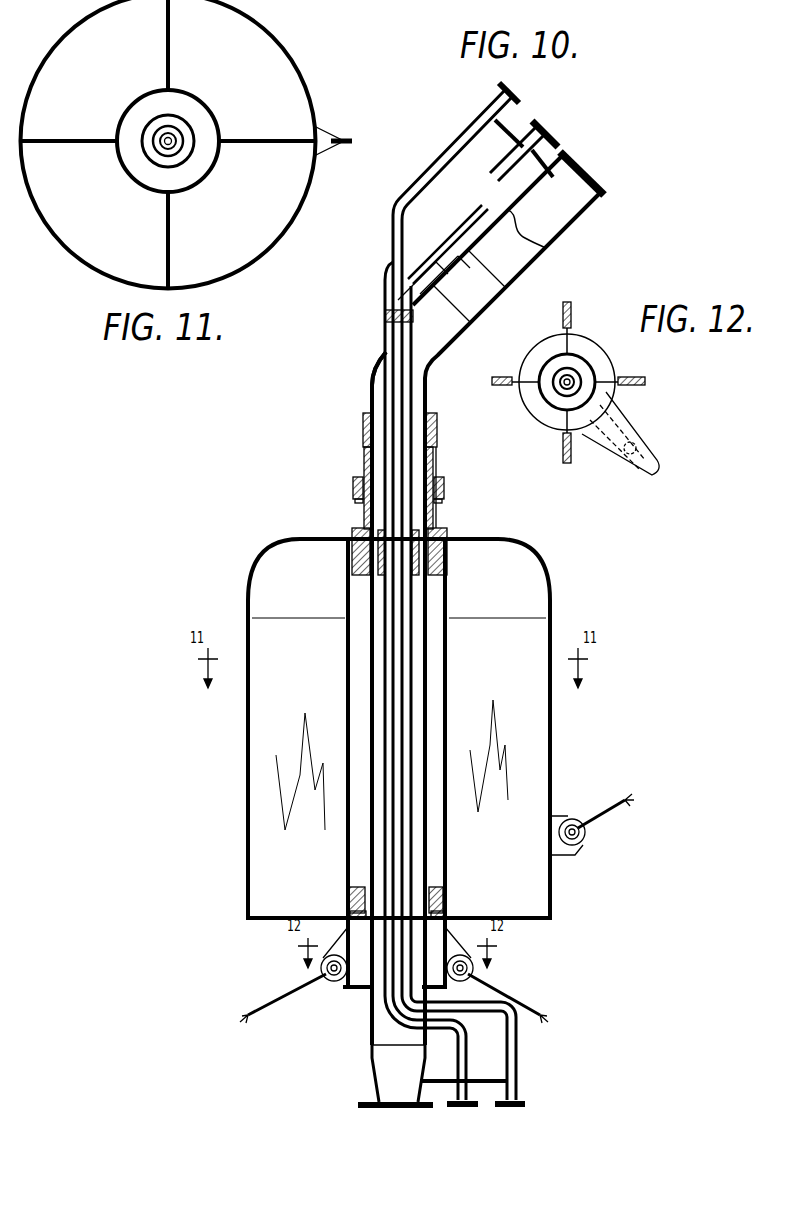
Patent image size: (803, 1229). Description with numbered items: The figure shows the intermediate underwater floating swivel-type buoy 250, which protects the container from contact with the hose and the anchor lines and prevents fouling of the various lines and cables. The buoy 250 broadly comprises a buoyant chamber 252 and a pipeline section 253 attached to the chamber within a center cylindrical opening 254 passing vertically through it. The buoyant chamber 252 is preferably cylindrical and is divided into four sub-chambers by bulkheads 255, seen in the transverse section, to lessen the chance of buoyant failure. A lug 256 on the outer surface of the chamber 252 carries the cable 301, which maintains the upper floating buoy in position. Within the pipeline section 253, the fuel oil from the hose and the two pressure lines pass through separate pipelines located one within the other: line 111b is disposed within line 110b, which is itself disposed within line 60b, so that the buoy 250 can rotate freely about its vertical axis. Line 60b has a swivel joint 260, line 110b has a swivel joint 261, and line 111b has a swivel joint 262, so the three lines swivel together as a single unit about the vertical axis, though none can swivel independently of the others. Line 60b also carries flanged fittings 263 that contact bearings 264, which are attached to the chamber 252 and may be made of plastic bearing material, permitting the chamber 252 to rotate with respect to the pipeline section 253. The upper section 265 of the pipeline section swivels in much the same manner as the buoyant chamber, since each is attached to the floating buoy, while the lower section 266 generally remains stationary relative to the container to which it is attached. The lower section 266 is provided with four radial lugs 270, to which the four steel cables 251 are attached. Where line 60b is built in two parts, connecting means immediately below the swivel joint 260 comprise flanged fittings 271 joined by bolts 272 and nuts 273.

In FIG. 11, the line 60b is at (181, 166).
In FIG. 12, the line 60b is at (578, 356).
In FIG. 10, the line 60b is at (447, 349).
In FIG. 11, the line 110b is at (154, 148).
In FIG. 12, the line 110b is at (580, 377).
In FIG. 10, the line 110b is at (428, 260).
In FIG. 11, the line 111b is at (176, 145).
In FIG. 12, the line 111b is at (560, 388).
In FIG. 10, the line 111b is at (392, 244).
In FIG. 10, the intermediate underwater floating swivel-type buoy 250 is at (553, 749).
In FIG. 10, the steel cables 251 is at (283, 992).
In FIG. 11, the buoyant chamber 252 is at (312, 87).
In FIG. 10, the buoyant chamber 252 is at (246, 766).
In FIG. 10, the pipeline section 253 is at (437, 513).
In FIG. 11, the center cylindrical opening 254 is at (146, 180).
In FIG. 10, the center cylindrical opening 254 is at (447, 659).
In FIG. 11, the bulkheads 255 is at (171, 47).
In FIG. 11, the lug 256 is at (343, 138).
In FIG. 10, the lug 256 is at (562, 815).
In FIG. 10, the swivel joint 260 is at (364, 433).
In FIG. 10, the swivel joint 261 is at (378, 572).
In FIG. 10, the swivel joint 262 is at (386, 321).
In FIG. 10, the flanged fittings 263 is at (352, 534).
In FIG. 10, the bearings 264 is at (352, 560).
In FIG. 10, the upper section 265 is at (372, 373).
In FIG. 10, the lower section 266 is at (373, 1069).
In FIG. 12, the radial lugs 270 is at (575, 312).
In FIG. 10, the radial lugs 270 is at (340, 986).
In FIG. 10, the flanged fittings 271 is at (364, 470).
In FIG. 10, the bolts 272 is at (353, 488).
In FIG. 10, the nuts 273 is at (356, 501).
In FIG. 10, the cable 301 is at (606, 819).